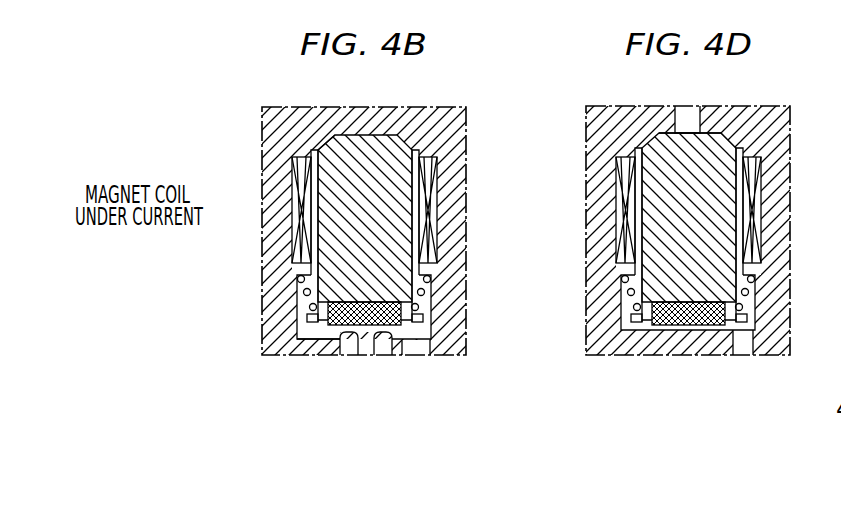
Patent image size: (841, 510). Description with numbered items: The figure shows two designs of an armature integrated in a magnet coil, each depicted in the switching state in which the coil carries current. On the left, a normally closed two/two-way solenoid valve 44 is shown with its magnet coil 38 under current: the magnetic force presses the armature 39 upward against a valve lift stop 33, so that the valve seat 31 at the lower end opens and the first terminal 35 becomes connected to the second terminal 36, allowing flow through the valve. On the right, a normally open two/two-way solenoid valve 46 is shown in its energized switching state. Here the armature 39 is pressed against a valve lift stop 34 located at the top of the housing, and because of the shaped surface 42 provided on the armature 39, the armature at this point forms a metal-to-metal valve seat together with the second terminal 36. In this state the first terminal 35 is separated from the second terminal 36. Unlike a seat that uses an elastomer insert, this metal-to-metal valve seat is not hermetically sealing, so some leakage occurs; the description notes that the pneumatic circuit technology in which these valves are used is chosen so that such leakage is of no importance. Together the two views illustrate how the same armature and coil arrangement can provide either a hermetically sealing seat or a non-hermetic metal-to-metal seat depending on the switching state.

In FIG. 4B, the valve seat 31 is at (384, 356).
In FIG. 4D, the valve seat 31 is at (688, 301).
In FIG. 4B, the valve lift stop 33 is at (332, 150).
In FIG. 4D, the valve lift stop 34 is at (661, 133).
In FIG. 4B, the first terminal 35 is at (416, 356).
In FIG. 4D, the first terminal 35 is at (742, 356).
In FIG. 4B, the second terminal 36 is at (365, 356).
In FIG. 4D, the second terminal 36 is at (689, 121).
In FIG. 4B, the magnet coil 38 is at (434, 178).
In FIG. 4D, the magnet coil 38 is at (758, 178).
In FIG. 4B, the armature 39 is at (378, 216).
In FIG. 4D, the armature 39 is at (701, 216).
In FIG. 4B, the shaped surface 42 is at (364, 244).
In FIG. 4D, the shaped surface 42 is at (643, 147).
In FIG. 4B, the normally closed 2/2-way solenoid valve 44 is at (268, 371).
In FIG. 4D, the normally open 2/2-way solenoid valve 46 is at (595, 369).